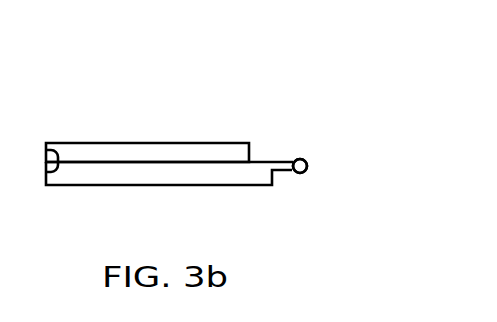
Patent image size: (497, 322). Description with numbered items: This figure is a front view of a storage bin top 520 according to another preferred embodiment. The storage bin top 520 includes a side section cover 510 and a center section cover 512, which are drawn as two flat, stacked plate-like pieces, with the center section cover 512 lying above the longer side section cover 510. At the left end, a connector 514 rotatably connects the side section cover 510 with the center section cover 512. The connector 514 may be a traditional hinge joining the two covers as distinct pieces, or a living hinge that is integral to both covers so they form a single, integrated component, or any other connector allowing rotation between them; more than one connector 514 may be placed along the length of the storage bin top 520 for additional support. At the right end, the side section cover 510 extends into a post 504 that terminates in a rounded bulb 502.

The storage bin top 520 is at (147, 72).
The center section cover 512 is at (143, 148).
The side section cover 510 is at (200, 178).
The connector 514 is at (47, 156).
The post 504 is at (287, 155).
The bulb 502 is at (308, 172).